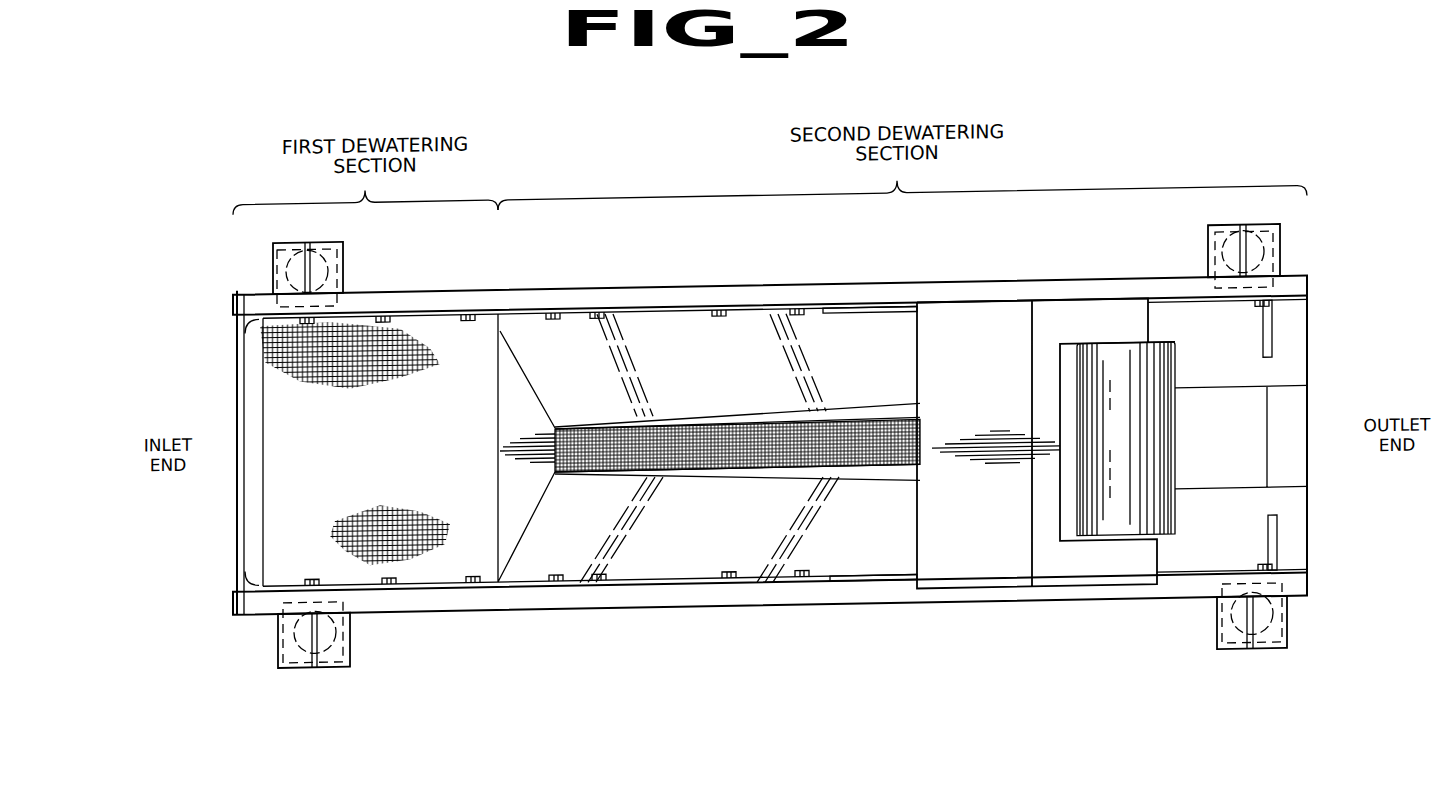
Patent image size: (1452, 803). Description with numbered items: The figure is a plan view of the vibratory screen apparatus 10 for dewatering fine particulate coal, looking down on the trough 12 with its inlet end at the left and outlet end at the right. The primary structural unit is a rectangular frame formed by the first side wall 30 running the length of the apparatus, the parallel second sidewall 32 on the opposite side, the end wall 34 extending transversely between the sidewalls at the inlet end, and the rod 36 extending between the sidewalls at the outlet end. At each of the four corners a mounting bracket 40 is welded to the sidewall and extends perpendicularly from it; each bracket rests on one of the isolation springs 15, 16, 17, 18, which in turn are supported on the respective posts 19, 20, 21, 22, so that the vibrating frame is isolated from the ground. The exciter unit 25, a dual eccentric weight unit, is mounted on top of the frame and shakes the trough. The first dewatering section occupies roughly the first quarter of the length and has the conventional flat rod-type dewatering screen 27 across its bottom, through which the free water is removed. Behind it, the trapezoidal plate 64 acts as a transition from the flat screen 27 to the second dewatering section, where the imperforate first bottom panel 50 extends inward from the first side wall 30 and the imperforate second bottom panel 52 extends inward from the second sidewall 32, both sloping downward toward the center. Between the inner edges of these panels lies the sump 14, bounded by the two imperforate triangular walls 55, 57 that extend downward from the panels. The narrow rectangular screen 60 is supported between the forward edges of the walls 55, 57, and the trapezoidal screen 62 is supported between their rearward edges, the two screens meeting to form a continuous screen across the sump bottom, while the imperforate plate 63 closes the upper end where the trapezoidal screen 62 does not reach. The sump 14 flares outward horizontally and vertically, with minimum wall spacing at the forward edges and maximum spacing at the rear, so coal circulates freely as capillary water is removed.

The vibratory screen apparatus 10 is at (884, 648).
The trough 12 is at (235, 536).
The sump 14 is at (860, 434).
The isolation spring 15 is at (280, 655).
The isolation spring 16 is at (272, 263).
The isolation spring 17 is at (1287, 649).
The isolation spring 18 is at (1282, 263).
The post 19 is at (350, 648).
The post 20 is at (345, 277).
The post 21 is at (1218, 662).
The post 22 is at (1215, 262).
The exciter unit 25 is at (1007, 577).
The dewatering screen 27 is at (272, 416).
The first side wall 30 is at (244, 588).
The second sidewall 32 is at (242, 327).
The end wall 34 is at (246, 504).
The rod 36 is at (1273, 364).
The mounting brackets 40 is at (343, 251).
The first bottom panel 50 is at (685, 578).
The second bottom panel 52 is at (692, 371).
The imperforate wall 55 is at (748, 491).
The imperforate wall 57 is at (752, 439).
The narrow rectangular screen 60 is at (600, 479).
The trapezoidal screen 62 is at (896, 488).
The imperforate plate 63 is at (1239, 476).
The trapezoidal plate 64 is at (502, 340).